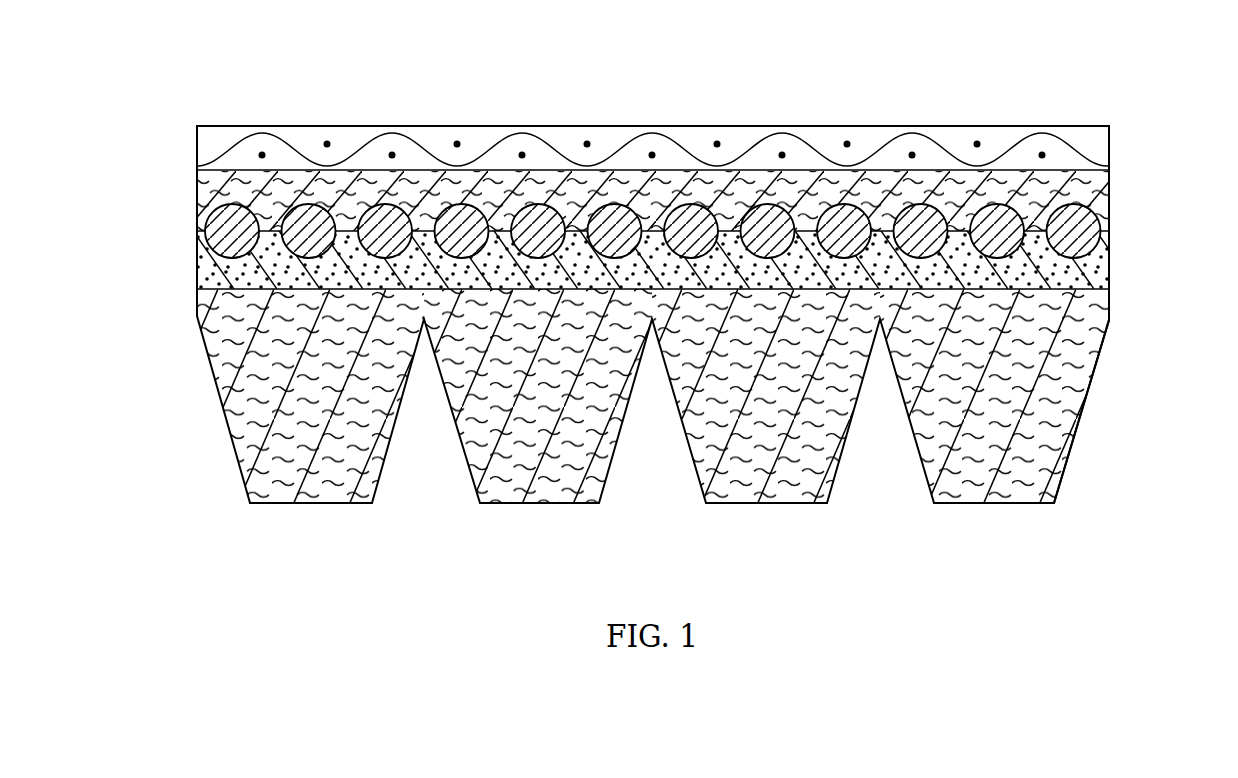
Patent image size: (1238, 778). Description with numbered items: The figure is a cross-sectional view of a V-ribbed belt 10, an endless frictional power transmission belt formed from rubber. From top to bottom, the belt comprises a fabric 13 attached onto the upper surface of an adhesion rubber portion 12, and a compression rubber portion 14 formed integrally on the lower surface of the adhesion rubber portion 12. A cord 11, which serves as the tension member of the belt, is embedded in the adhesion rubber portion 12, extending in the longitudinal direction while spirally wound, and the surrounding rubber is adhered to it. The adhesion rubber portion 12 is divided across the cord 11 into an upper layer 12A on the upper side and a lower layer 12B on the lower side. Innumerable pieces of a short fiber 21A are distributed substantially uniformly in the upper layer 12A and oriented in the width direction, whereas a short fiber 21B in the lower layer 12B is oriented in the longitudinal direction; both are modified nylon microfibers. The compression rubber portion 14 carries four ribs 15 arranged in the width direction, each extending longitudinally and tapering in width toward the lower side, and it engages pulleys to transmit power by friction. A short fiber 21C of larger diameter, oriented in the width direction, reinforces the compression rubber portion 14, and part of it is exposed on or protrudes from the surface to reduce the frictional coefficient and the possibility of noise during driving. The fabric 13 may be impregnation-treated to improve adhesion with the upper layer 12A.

The V-ribbed belt 10 is at (717, 286).
The cord 11 is at (767, 216).
The adhesion rubber portion 12 is at (717, 179).
The upper layer 12A is at (1101, 197).
The lower layer 12B is at (1108, 257).
The fabric 13 is at (1097, 147).
The compression rubber portion 14 is at (692, 418).
The rib 15 is at (1021, 527).
The short fiber 21A is at (893, 183).
The short fiber 21B is at (1105, 274).
The short fiber 21C is at (1050, 453).